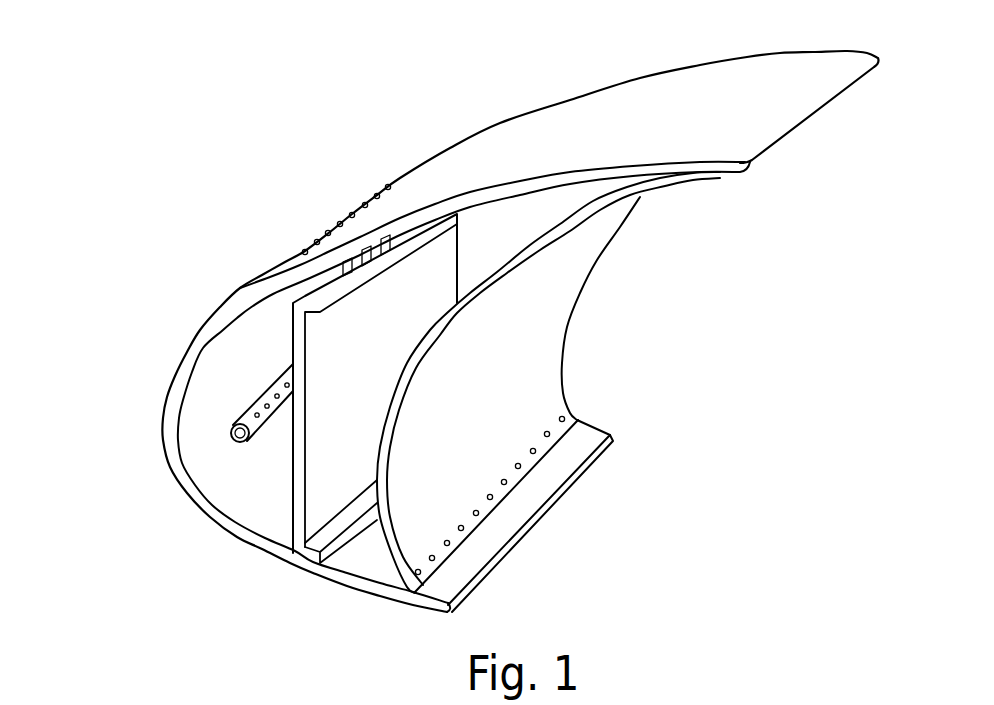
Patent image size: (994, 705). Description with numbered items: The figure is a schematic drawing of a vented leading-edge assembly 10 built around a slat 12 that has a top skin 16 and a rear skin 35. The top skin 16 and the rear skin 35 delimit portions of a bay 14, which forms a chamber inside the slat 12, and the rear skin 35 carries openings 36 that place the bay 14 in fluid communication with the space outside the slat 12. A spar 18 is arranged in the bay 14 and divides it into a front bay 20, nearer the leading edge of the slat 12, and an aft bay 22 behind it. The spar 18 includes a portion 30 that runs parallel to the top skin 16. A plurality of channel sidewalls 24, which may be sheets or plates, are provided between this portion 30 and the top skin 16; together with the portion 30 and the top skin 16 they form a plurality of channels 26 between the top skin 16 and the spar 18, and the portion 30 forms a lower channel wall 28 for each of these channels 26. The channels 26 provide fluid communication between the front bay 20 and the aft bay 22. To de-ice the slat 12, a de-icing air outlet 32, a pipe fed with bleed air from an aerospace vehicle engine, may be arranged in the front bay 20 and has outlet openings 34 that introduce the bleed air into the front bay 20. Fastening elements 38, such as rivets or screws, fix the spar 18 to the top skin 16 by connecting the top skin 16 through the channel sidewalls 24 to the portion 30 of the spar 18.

The vented leading-edge assembly 10 is at (194, 178).
The slat 12 is at (193, 508).
The bay 14 is at (213, 410).
The top skin 16 is at (465, 200).
The spar 18 is at (297, 328).
The front bay 20 is at (203, 450).
The aft bay 22 is at (537, 213).
The channel sidewalls 24 is at (345, 262).
The channels 26 is at (305, 285).
The lower channel wall 28 is at (288, 282).
The portion of the spar 30 is at (313, 308).
The de-icing air outlet 32 is at (248, 443).
The outlet openings 34 is at (265, 405).
The rear skin 35 is at (543, 310).
The openings 36 is at (435, 558).
The fastening elements 38 is at (362, 200).